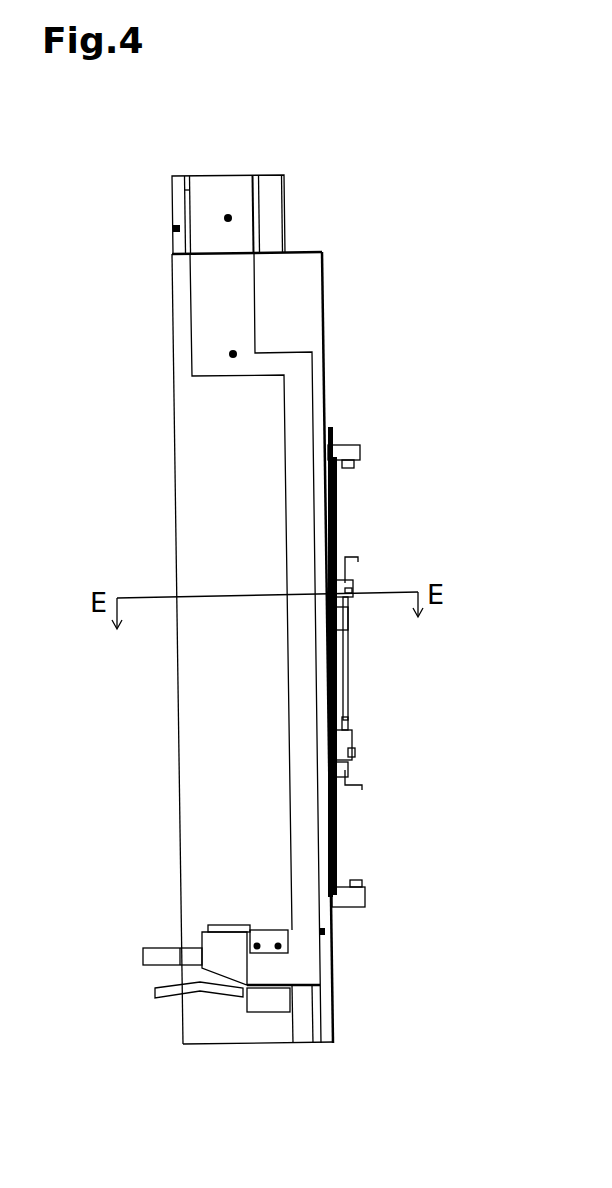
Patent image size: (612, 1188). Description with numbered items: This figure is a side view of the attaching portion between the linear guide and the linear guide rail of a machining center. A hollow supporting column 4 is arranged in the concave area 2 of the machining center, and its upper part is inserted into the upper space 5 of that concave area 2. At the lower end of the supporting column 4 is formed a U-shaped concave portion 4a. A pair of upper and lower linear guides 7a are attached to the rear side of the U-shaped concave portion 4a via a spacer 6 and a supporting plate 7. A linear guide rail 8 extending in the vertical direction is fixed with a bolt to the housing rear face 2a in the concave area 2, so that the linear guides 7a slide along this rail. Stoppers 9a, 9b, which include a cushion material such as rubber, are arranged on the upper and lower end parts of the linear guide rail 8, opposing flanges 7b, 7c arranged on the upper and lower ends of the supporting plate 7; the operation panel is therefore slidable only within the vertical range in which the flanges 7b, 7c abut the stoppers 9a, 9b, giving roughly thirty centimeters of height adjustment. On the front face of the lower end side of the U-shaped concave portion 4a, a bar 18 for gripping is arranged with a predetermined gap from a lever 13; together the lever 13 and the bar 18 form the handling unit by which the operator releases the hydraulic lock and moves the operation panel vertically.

The concave area 2 is at (210, 455).
The housing rear face 2a is at (322, 293).
The supporting column 4 is at (191, 302).
The U-shaped concave portion 4a is at (298, 398).
The upper space 5 is at (285, 213).
The spacer 6 is at (330, 690).
The supporting plate 7 is at (348, 673).
The linear guide 7a is at (352, 586).
The flange 7b is at (349, 557).
The flange 7c is at (353, 788).
The linear guide rail 8 is at (340, 833).
The stopper 9a is at (360, 458).
The stopper 9b is at (365, 907).
The lever 13 is at (155, 993).
The bar 18 is at (152, 946).